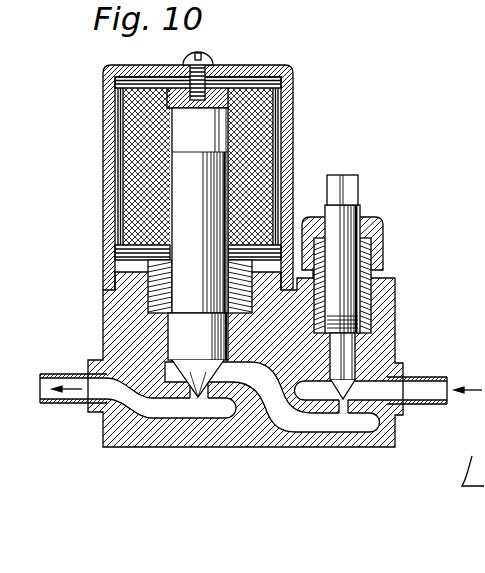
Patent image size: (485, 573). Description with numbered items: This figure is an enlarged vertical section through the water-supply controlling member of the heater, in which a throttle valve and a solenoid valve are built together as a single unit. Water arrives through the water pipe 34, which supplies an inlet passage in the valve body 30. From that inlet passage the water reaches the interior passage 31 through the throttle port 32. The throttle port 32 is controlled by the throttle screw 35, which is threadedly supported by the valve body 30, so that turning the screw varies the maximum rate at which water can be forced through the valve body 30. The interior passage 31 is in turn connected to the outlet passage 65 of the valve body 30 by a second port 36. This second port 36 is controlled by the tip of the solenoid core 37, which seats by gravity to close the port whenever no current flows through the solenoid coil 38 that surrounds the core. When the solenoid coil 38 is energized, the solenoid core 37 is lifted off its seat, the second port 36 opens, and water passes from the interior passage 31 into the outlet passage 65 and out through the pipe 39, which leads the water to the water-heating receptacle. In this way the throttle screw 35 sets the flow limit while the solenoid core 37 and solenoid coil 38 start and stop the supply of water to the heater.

The valve body 30 is at (245, 435).
The interior passage 31 is at (290, 428).
The throttle port 32 is at (343, 410).
The water pipe 34 is at (423, 378).
The throttle screw 35 is at (343, 218).
The second port 36 is at (202, 388).
The solenoid core 37 is at (187, 333).
The solenoid coil 38 is at (143, 162).
The pipe 39 is at (66, 398).
The outlet passage 65 is at (140, 410).